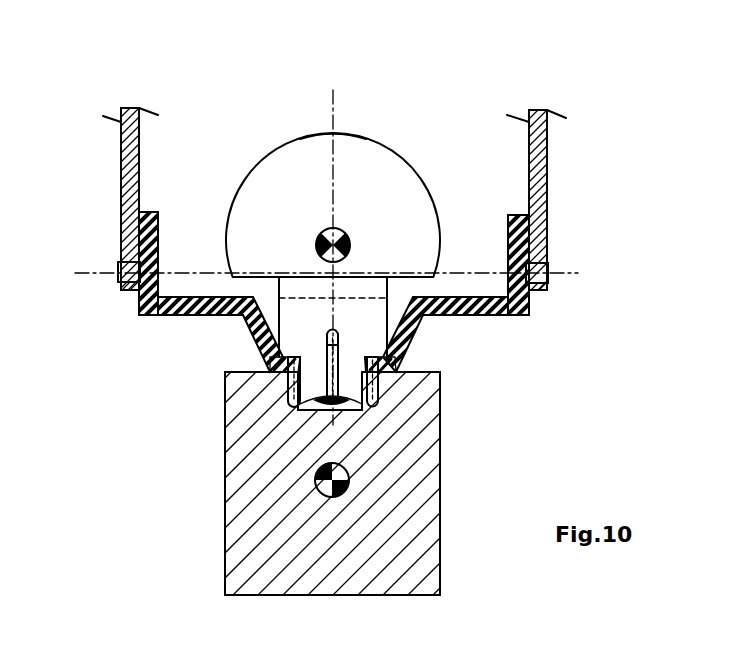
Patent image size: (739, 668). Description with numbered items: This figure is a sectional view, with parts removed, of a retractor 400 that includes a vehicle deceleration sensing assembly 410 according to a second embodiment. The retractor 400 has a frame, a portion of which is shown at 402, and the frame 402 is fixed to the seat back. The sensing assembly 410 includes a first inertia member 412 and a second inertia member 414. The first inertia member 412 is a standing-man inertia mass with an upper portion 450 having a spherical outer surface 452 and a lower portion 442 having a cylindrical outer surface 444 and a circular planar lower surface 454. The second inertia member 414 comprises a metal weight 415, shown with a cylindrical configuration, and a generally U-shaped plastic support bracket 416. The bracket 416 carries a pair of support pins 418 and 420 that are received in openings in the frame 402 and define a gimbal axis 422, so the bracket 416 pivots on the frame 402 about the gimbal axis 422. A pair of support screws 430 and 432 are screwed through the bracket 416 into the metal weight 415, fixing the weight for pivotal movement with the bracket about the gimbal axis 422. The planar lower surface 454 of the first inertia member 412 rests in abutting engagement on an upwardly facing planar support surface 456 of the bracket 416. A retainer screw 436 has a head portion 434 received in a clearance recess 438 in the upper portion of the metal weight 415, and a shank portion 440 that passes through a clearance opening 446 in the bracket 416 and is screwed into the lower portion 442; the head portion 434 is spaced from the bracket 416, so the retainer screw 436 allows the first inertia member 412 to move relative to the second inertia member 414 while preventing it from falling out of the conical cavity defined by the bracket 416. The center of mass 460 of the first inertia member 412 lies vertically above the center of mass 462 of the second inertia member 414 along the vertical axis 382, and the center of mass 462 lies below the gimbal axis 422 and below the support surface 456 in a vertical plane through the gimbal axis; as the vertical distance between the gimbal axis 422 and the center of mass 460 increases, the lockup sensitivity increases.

The retractor 400 is at (572, 80).
The frame 402 is at (543, 145).
The vehicle deceleration sensing assembly 410 is at (178, 548).
The first inertia member 412 is at (327, 175).
The second inertia member 414 is at (530, 392).
The metal weight 415 is at (440, 582).
The support bracket 416 is at (527, 315).
The support pin 418 is at (128, 265).
The support pin 420 is at (545, 265).
The gimbal axis 422 is at (578, 275).
The support screw 430 is at (290, 405).
The support screw 432 is at (415, 388).
The head portion 434 is at (313, 420).
The retainer screw 436 is at (300, 410).
The clearance recess 438 is at (363, 413).
The shank portion 440 is at (328, 330).
The lower portion 442 is at (350, 296).
The cylindrical outer surface 444 is at (383, 283).
The clearance opening 446 is at (365, 347).
The upper portion 450 is at (375, 178).
The spherical outer surface 452 is at (363, 140).
The planar lower surface 454 is at (288, 385).
The support surface 456 is at (322, 348).
The center of mass 460 is at (318, 238).
The center of mass 462 is at (350, 482).
The vertical axis 382 is at (328, 108).